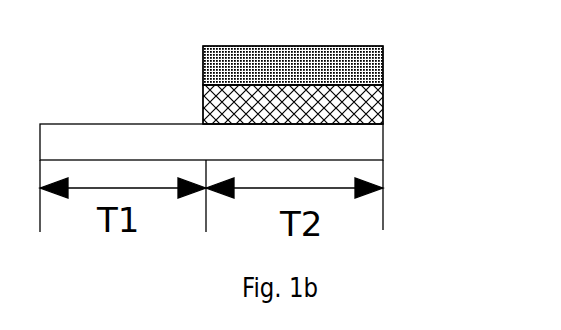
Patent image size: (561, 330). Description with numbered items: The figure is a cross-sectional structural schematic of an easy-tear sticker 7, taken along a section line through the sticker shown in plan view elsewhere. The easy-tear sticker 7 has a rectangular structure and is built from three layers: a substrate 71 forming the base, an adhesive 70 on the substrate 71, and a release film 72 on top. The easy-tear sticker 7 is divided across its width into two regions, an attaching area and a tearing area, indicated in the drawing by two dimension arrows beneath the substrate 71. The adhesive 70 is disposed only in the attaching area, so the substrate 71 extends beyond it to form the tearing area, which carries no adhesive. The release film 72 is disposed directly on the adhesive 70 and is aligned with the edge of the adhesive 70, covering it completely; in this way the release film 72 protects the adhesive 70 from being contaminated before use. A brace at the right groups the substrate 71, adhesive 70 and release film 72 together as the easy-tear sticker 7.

The easy-tear sticker 7 is at (285, 109).
The adhesive 70 is at (385, 99).
The substrate 71 is at (363, 141).
The release film 72 is at (385, 52).